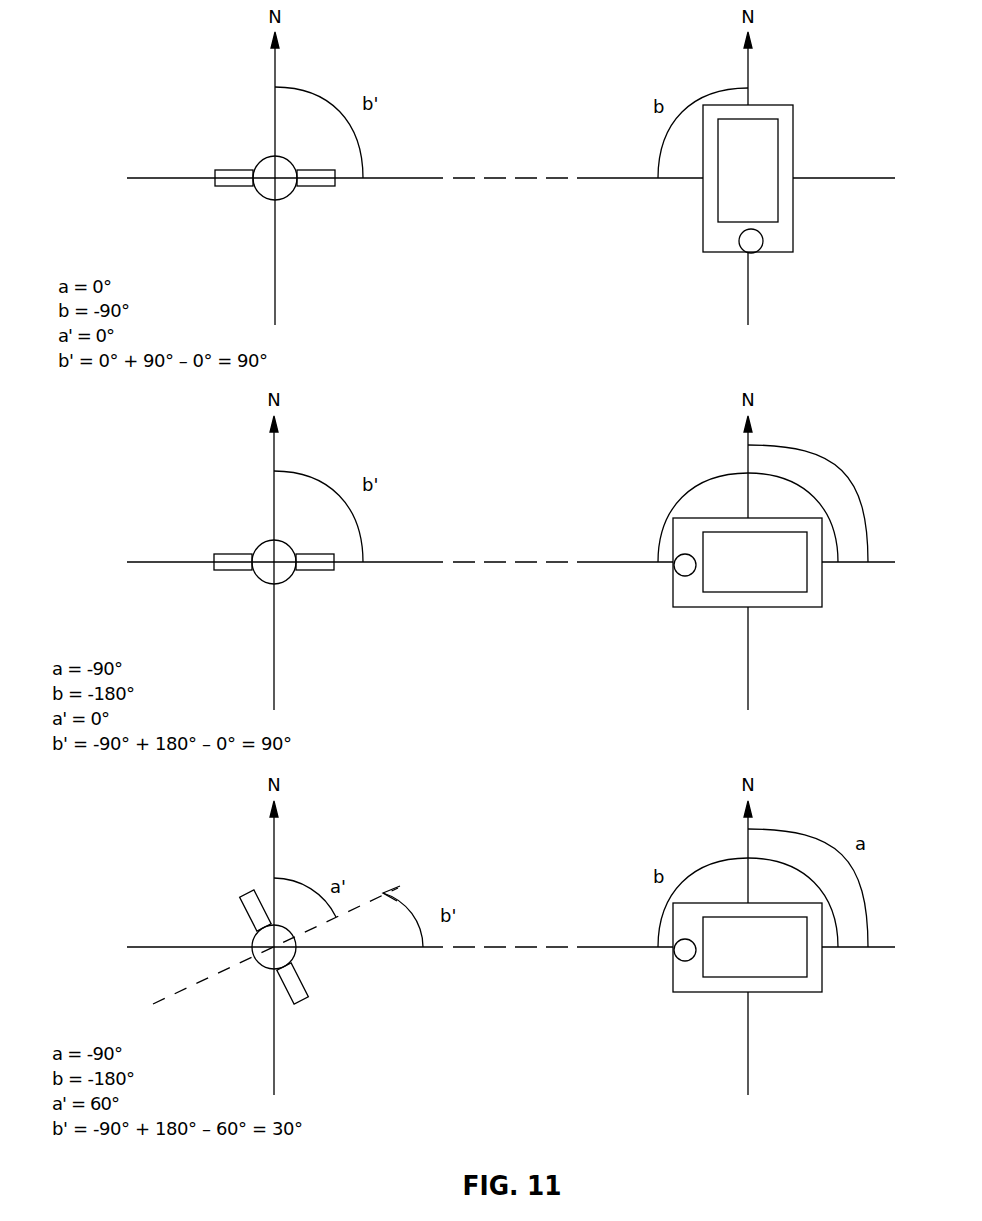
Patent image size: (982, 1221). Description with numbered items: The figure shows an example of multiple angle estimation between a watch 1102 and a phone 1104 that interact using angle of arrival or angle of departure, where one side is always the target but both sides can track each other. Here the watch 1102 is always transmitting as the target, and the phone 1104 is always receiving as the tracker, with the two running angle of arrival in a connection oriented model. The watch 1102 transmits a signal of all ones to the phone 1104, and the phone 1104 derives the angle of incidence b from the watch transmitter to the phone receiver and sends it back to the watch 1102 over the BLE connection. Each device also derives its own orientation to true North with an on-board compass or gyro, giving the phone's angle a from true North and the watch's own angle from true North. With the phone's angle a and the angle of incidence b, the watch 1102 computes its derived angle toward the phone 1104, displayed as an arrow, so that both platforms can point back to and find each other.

The watch 1102 is at (293, 192).
The phone 1104 is at (705, 253).
The phone's angle from true North a is at (808, 503).
The angle of incidence b is at (745, 517).